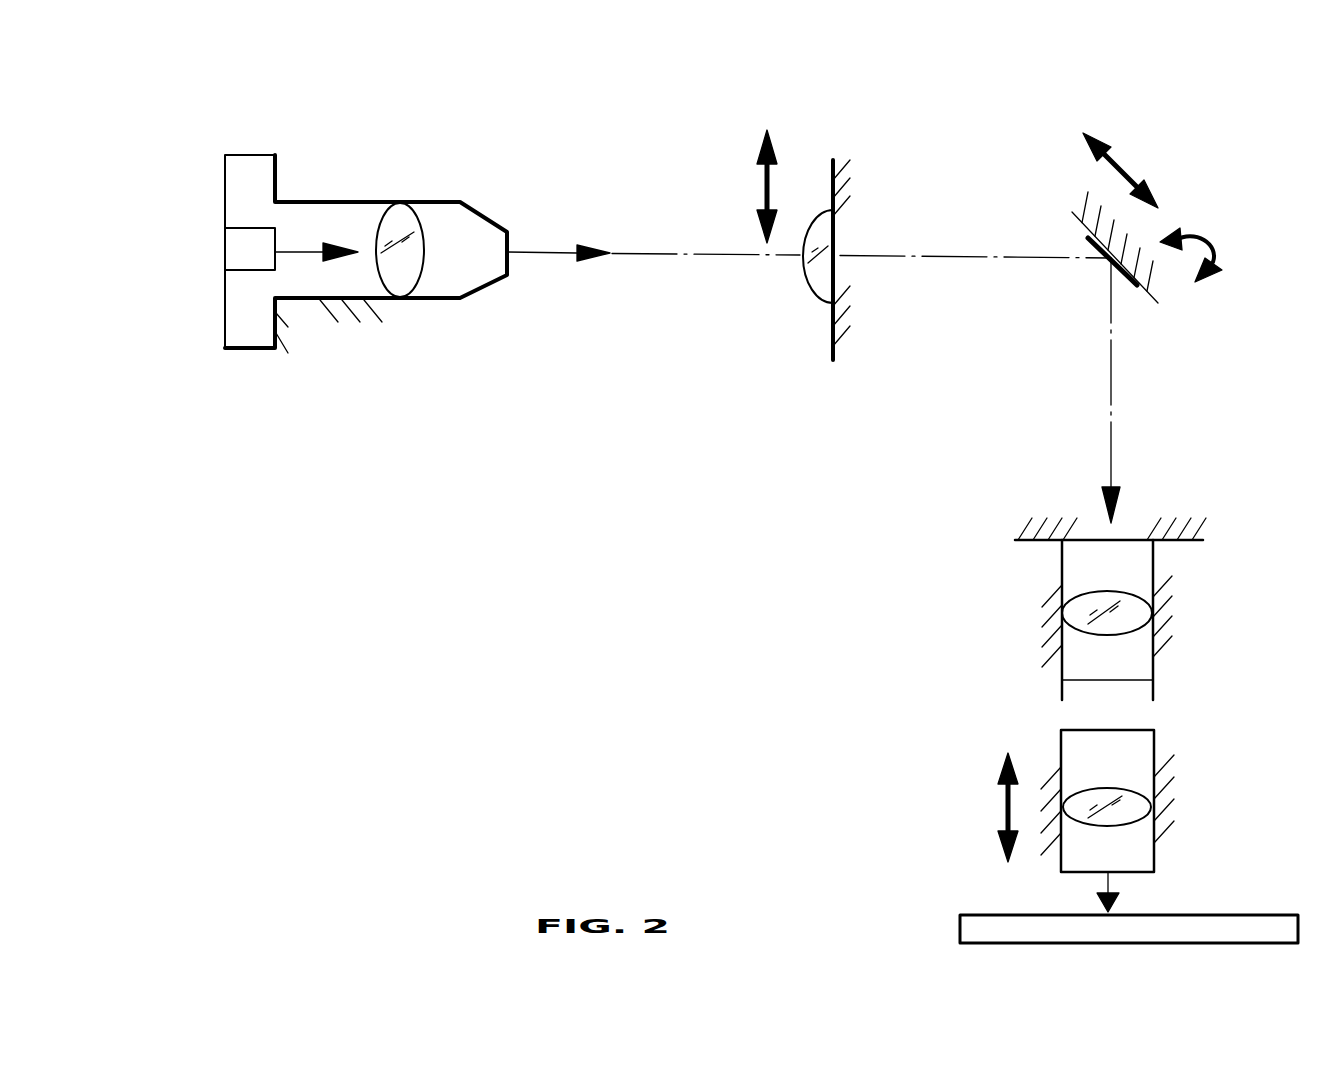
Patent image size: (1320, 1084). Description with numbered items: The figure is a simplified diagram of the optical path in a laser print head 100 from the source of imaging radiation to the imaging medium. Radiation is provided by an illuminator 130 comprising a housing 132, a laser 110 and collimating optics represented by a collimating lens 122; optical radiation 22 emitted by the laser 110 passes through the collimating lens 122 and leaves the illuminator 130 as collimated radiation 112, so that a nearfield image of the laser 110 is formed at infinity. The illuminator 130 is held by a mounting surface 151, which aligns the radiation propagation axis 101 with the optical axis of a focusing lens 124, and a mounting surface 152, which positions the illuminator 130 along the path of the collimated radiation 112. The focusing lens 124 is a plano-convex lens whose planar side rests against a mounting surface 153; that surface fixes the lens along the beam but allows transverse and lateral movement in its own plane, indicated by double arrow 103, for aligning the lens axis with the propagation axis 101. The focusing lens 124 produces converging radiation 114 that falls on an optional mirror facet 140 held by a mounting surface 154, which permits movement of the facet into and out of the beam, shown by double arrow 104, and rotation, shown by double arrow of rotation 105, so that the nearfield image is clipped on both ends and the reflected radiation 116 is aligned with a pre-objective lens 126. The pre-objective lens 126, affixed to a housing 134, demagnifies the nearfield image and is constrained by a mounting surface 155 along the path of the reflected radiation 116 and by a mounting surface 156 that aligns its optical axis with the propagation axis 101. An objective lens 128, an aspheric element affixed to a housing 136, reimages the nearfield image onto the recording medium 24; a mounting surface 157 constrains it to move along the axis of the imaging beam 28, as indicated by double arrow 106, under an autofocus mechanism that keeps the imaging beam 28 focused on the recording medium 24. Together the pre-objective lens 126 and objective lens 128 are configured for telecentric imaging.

The laser print head 100 is at (533, 562).
The illuminator 130 is at (518, 134).
The housing 132 is at (322, 202).
The laser 110 is at (225, 295).
The optical radiation 22 is at (310, 254).
The collimating lens 122 is at (415, 284).
The mounting surface 151 is at (372, 296).
The mounting surface 152 is at (278, 335).
The collimated radiation 112 is at (557, 253).
The radiation propagation axis 101 is at (676, 255).
The double arrow 103 is at (765, 183).
The mounting surface 153 is at (833, 180).
The focusing lens 124 is at (807, 289).
The converging radiation 114 is at (917, 262).
The double arrow 104 is at (1125, 170).
The double arrow of rotation 105 is at (1213, 242).
The mounting surface 154 is at (1075, 215).
The mirror facet 140 is at (1132, 282).
The reflected radiation 116 is at (1112, 455).
The mounting surface 155 is at (1040, 542).
The pre-objective lens 126 is at (1128, 595).
The housing 134 is at (1157, 675).
The mounting surface 156 is at (1062, 690).
The housing 136 is at (1061, 745).
The mounting surface 157 is at (1154, 762).
The double arrow 106 is at (1005, 812).
The objective lens 128 is at (1120, 826).
The imaging beam 28 is at (1110, 880).
The recording medium 24 is at (1252, 915).